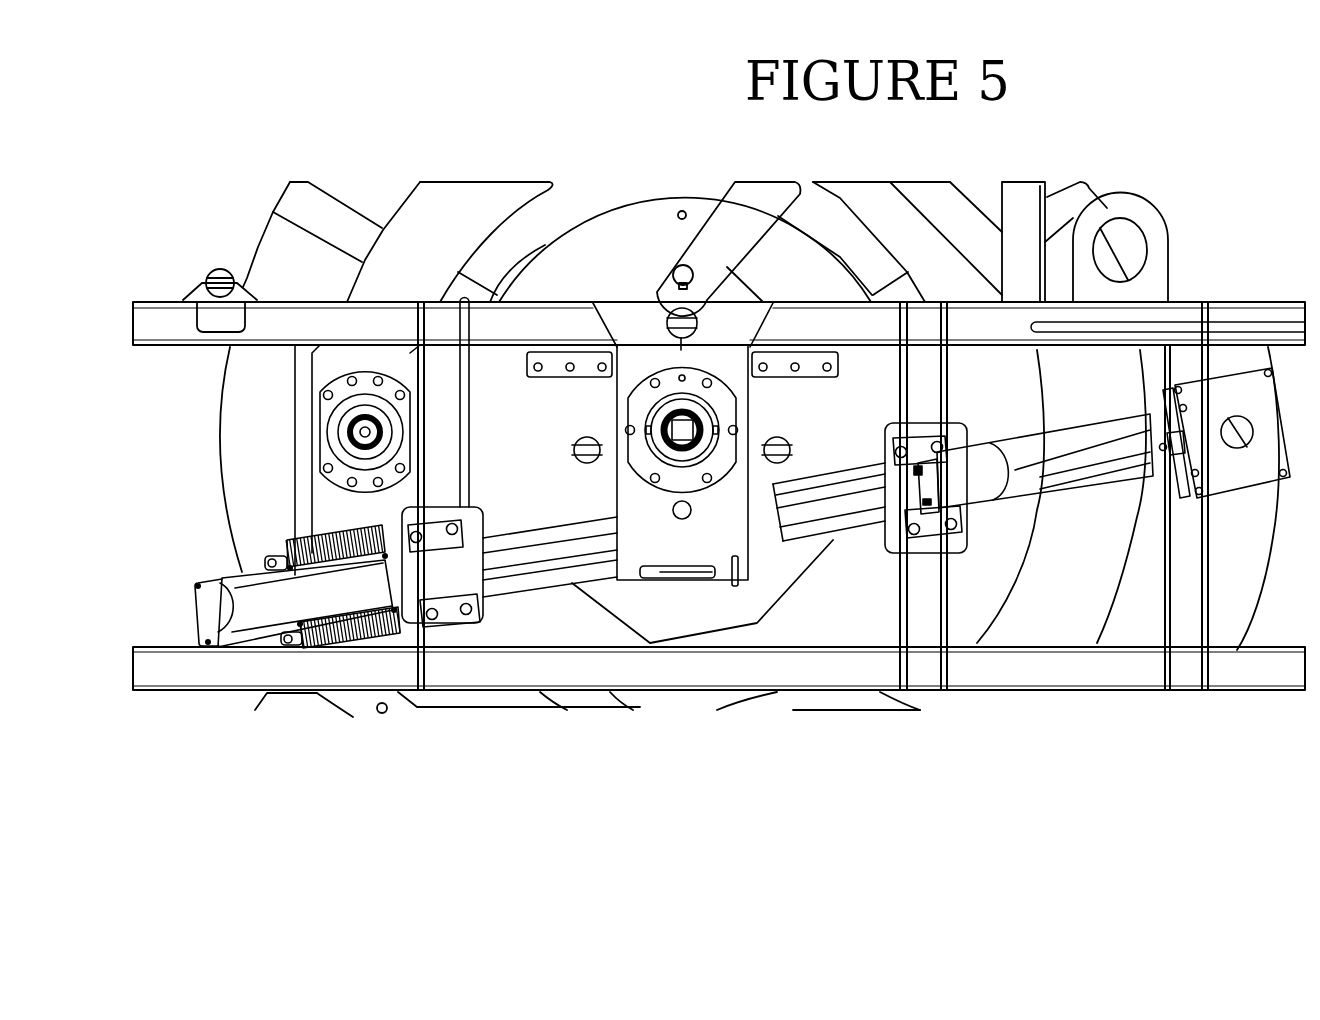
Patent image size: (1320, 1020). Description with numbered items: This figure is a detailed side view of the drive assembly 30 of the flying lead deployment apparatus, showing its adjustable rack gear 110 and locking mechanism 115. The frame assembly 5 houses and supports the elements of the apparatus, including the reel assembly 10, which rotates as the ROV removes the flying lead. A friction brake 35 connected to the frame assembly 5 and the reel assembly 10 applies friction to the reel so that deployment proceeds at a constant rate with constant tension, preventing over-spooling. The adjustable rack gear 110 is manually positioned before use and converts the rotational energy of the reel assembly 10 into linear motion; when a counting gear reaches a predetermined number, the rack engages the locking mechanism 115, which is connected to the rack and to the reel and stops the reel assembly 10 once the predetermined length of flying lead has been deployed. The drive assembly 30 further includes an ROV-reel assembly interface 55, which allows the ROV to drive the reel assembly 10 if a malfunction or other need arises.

The frame assembly 5 is at (168, 675).
The reel assembly 10 is at (222, 469).
The drive assembly 30 is at (730, 515).
The friction brake 35 is at (367, 428).
The ROV-reel assembly interface 55 is at (677, 420).
The adjustable rack gear 110 is at (462, 567).
The locking mechanism 115 is at (1254, 388).